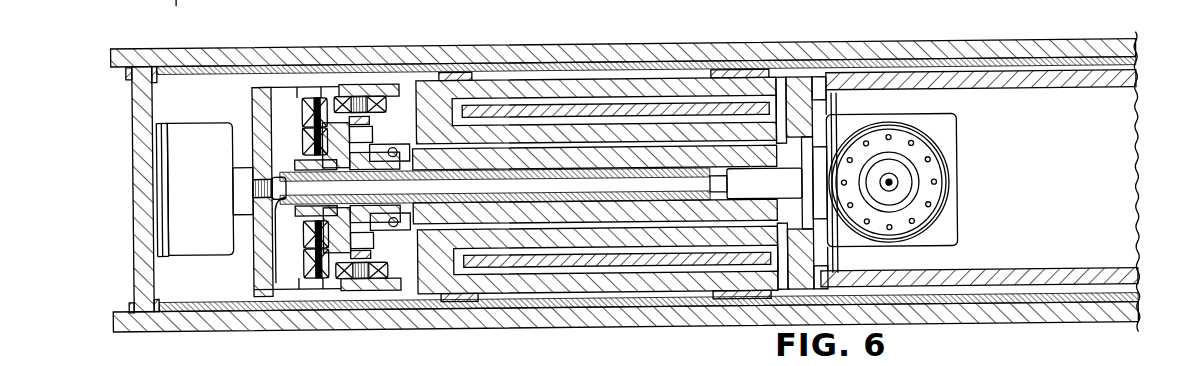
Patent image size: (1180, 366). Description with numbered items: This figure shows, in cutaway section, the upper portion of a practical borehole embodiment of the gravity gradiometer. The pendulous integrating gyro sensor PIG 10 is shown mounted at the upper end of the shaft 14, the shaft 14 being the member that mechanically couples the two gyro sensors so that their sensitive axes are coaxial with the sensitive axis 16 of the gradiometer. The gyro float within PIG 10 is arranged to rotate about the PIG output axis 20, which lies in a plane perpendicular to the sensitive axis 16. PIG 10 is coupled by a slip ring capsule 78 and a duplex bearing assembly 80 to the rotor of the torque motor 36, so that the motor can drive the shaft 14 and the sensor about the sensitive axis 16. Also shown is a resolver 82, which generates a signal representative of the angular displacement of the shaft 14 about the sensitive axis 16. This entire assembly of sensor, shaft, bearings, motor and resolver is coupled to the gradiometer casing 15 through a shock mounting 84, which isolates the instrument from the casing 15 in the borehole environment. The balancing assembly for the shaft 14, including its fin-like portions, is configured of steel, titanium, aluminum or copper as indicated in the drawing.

The pendulous integrating gyro sensor PIG-1 10 is at (939, 152).
The shaft 14 is at (1113, 85).
The gradiometer casing 15 is at (684, 46).
The sensitive axis 16 is at (121, 190).
The PIG output axis 20 is at (893, 189).
The torque motor 36 is at (361, 98).
The slip ring capsule 78 is at (766, 171).
The duplex bearing assembly 80 is at (392, 149).
The resolver 82 is at (305, 103).
The shock mounting 84 is at (187, 122).